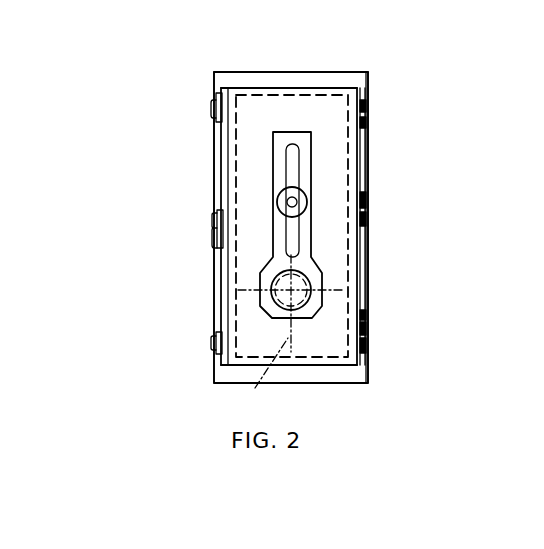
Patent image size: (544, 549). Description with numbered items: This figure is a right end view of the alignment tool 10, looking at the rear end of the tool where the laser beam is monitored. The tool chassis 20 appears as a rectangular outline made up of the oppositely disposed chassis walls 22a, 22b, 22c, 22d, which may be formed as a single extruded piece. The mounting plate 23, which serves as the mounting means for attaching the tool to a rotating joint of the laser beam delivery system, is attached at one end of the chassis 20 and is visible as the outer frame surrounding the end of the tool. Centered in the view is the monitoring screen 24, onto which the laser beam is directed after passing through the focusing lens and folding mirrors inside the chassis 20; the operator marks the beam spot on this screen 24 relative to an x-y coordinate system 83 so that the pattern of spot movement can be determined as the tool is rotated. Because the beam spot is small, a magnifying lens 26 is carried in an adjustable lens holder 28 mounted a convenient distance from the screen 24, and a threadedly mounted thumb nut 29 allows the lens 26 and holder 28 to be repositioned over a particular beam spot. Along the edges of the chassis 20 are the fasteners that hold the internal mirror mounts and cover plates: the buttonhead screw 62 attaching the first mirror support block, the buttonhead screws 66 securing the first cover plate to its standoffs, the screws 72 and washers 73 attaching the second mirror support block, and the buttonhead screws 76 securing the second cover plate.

The alignment tool 10 is at (428, 190).
The tool chassis 20 is at (370, 82).
The chassis wall 22a is at (312, 88).
The chassis wall 22b is at (357, 160).
The chassis wall 22c is at (333, 366).
The chassis wall 22d is at (224, 173).
The mounting plate 23 is at (238, 75).
The monitoring screen 24 is at (257, 315).
The magnifying lens 26 is at (305, 282).
The adjustable lens holder 28 is at (303, 137).
The thumb nut 29 is at (297, 202).
The buttonhead screw 62 is at (368, 127).
The buttonhead screw 66 is at (212, 108).
The screw 72 is at (365, 325).
The washer 73 is at (365, 318).
The buttonhead screw 76 is at (210, 340).
The x-y coordinate system 83 is at (256, 375).